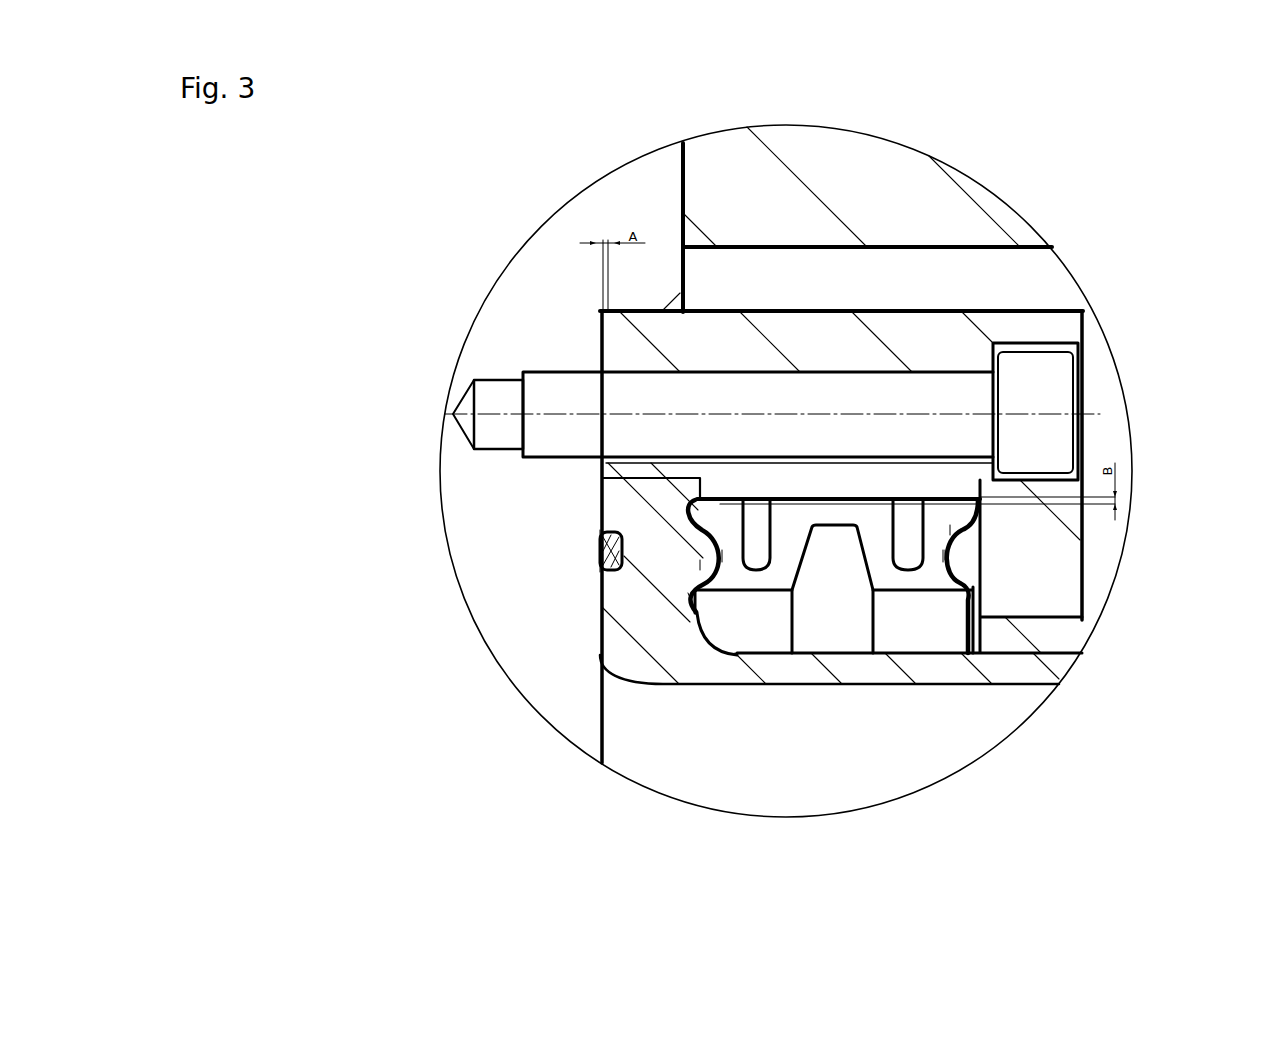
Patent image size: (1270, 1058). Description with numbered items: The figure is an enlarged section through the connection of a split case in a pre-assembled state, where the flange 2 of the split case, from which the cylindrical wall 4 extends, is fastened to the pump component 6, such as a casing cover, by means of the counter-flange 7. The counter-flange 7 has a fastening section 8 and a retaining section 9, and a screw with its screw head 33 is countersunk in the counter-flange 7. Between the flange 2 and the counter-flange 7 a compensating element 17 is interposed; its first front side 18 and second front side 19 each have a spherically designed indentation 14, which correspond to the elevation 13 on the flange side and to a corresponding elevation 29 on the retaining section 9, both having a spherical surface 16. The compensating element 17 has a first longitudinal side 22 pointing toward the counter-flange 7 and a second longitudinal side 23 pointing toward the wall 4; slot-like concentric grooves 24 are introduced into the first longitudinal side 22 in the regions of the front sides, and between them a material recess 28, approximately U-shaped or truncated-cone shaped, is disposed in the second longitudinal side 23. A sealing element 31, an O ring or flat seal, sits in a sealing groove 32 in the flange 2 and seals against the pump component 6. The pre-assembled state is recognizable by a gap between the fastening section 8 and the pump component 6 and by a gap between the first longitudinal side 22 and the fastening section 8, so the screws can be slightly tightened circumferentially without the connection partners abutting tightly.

The flange 2 is at (618, 583).
The cylindrical wall 4 is at (913, 673).
The pump component 6 is at (497, 507).
The counter-flange 7 is at (807, 320).
The fastening section 8 is at (780, 322).
The retaining section 9 is at (1068, 540).
The elevation 13 is at (703, 557).
The indentation 14 is at (720, 560).
The spherical surface 16 is at (822, 560).
The compensating element 17 is at (790, 510).
The first front side 18 is at (690, 598).
The second front side 19 is at (958, 532).
The first longitudinal side 22 is at (862, 522).
The second longitudinal side 23 is at (927, 594).
The concentric grooves 24 is at (752, 522).
The material recess 28 is at (832, 589).
The elevation 29 is at (958, 530).
The sealing element 31 is at (600, 552).
The sealing groove 32 is at (603, 563).
The screw head 33 is at (1035, 411).